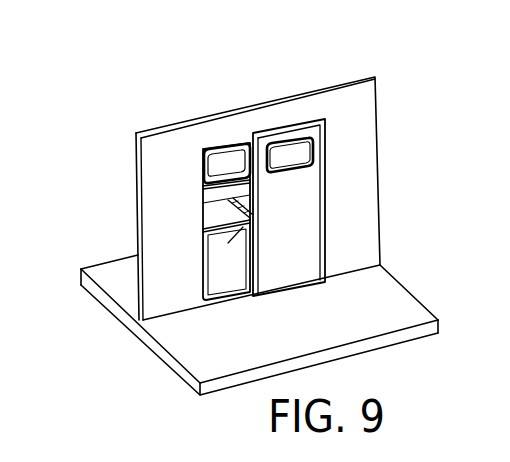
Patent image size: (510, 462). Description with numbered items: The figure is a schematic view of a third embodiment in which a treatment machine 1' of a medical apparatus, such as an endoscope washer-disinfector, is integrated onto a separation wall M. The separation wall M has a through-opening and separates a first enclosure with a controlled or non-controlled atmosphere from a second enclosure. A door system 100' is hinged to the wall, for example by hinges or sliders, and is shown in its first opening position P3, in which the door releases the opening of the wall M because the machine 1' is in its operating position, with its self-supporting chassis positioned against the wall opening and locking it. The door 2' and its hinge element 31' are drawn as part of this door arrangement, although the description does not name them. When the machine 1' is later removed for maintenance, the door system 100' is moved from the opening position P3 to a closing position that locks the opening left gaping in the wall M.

The treatment machine 1' is at (245, 163).
The door 2' is at (141, 221).
The hinge bracket 31' is at (240, 208).
The door system 100' is at (356, 207).
The separation wall M is at (363, 118).
The first opening position of the door system P3 is at (365, 232).